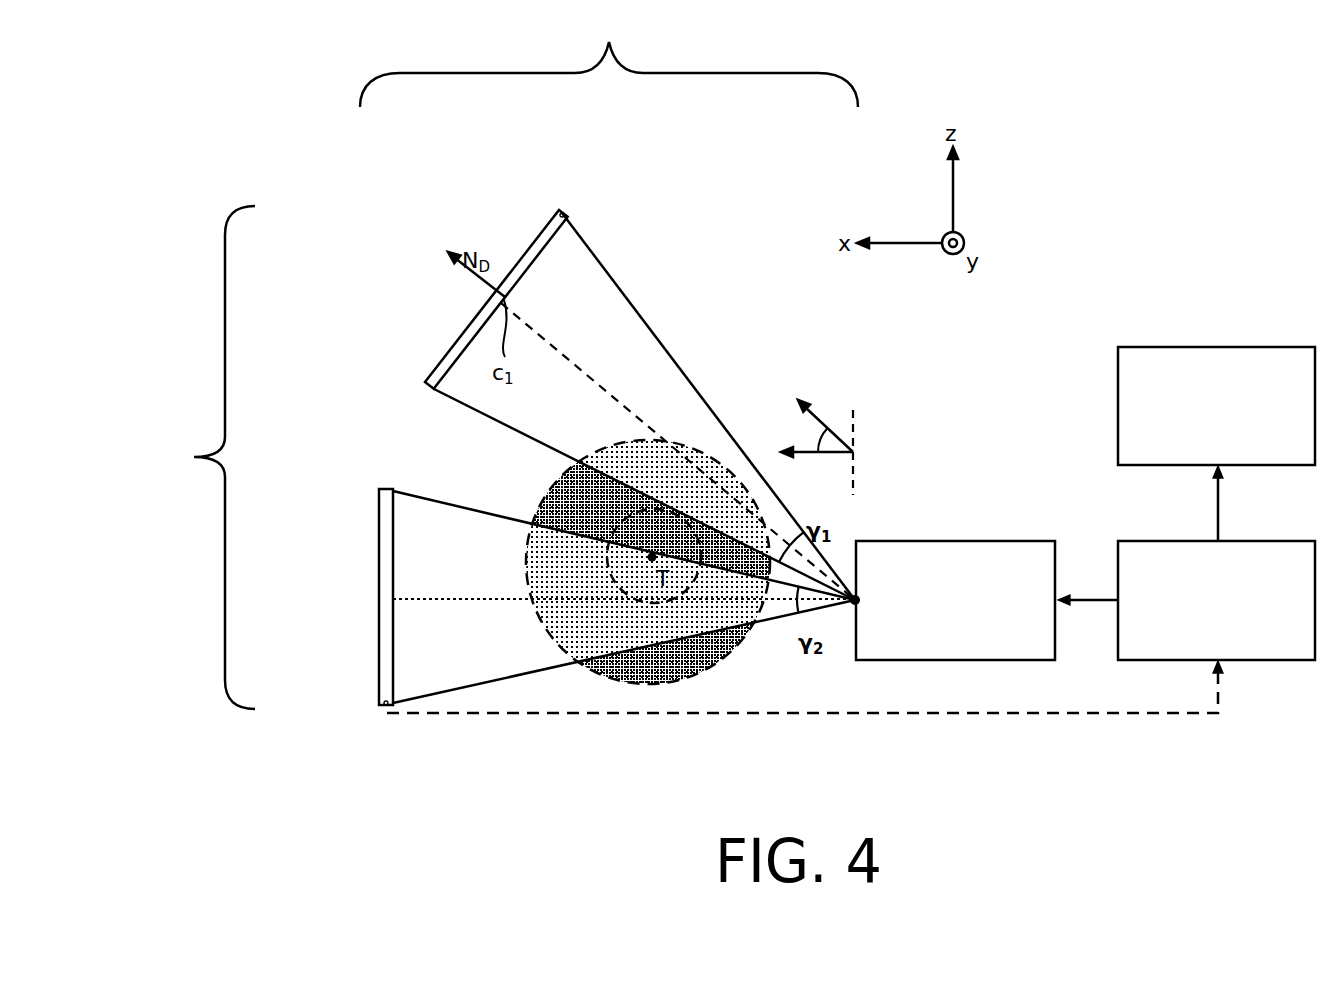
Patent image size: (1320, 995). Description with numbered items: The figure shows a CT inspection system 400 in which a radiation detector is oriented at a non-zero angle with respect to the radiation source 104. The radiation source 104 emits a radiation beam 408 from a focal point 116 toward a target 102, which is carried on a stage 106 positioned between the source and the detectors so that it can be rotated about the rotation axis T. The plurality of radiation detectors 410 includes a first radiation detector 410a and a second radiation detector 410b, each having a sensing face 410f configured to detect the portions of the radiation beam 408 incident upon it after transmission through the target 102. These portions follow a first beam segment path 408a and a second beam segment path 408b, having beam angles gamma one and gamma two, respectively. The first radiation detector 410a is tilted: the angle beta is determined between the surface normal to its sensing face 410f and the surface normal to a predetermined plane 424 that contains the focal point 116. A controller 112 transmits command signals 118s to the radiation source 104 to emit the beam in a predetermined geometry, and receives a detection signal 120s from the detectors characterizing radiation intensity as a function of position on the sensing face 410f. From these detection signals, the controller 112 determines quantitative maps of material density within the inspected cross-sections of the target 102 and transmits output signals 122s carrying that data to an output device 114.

The CT inspection system 400 is at (1150, 150).
The radiation beam 408 is at (609, 59).
The first beam segment path 408a is at (644, 406).
The second beam segment path 408b is at (624, 597).
The plurality of radiation detectors 410 is at (201, 457).
The first radiation detector 410a is at (441, 362).
The second radiation detector 410b is at (379, 600).
The sensing face 410f is at (568, 225).
The predetermined plane 424 is at (853, 450).
The target 102 is at (723, 655).
The radiation source 104 is at (955, 600).
The stage 106 is at (613, 532).
The controller 112 is at (1216, 600).
The output device 114 is at (1216, 406).
The focal point 116 is at (858, 598).
The command signals 118s is at (1078, 596).
The detection signal 120s is at (880, 713).
The output signals 122s is at (1220, 512).